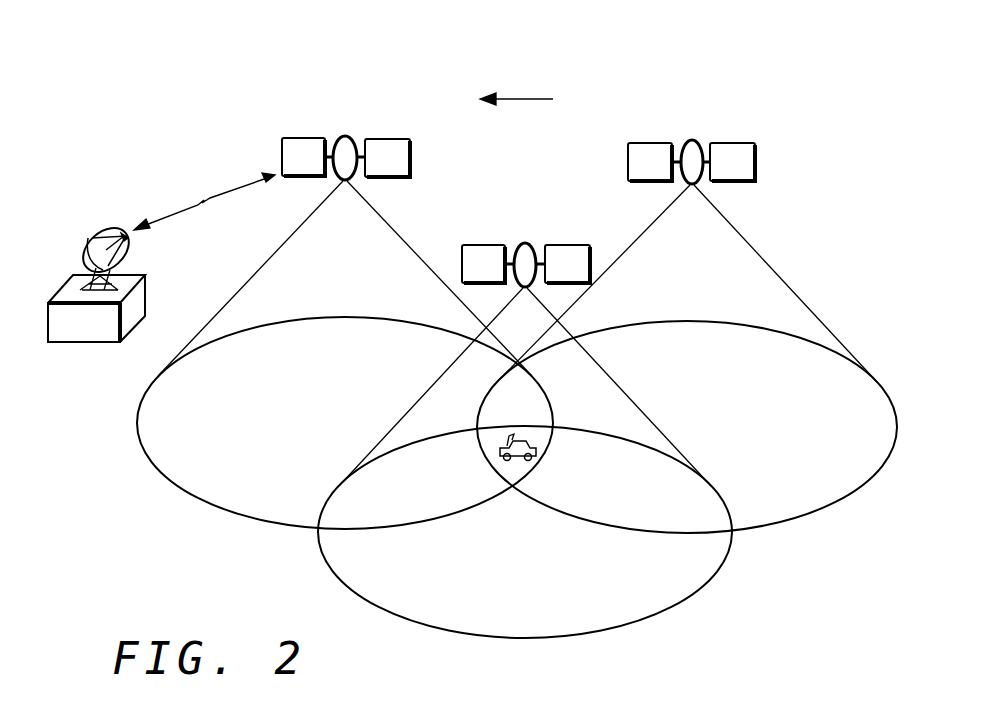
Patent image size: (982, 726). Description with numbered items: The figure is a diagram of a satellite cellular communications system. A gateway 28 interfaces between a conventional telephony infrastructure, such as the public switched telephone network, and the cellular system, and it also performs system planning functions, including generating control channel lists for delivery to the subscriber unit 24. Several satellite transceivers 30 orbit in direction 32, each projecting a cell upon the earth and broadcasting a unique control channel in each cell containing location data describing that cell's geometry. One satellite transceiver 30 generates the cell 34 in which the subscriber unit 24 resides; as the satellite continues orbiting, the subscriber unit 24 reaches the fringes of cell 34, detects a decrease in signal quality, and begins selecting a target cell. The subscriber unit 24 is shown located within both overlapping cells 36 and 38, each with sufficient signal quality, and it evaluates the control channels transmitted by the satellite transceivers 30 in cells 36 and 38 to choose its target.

The subscriber unit 24 is at (535, 455).
The gateway 28 is at (65, 292).
The satellite transceiver 30 is at (346, 136).
The direction 32 is at (529, 97).
The cell 34 is at (206, 492).
The cell 36 is at (424, 610).
The cell 38 is at (818, 497).